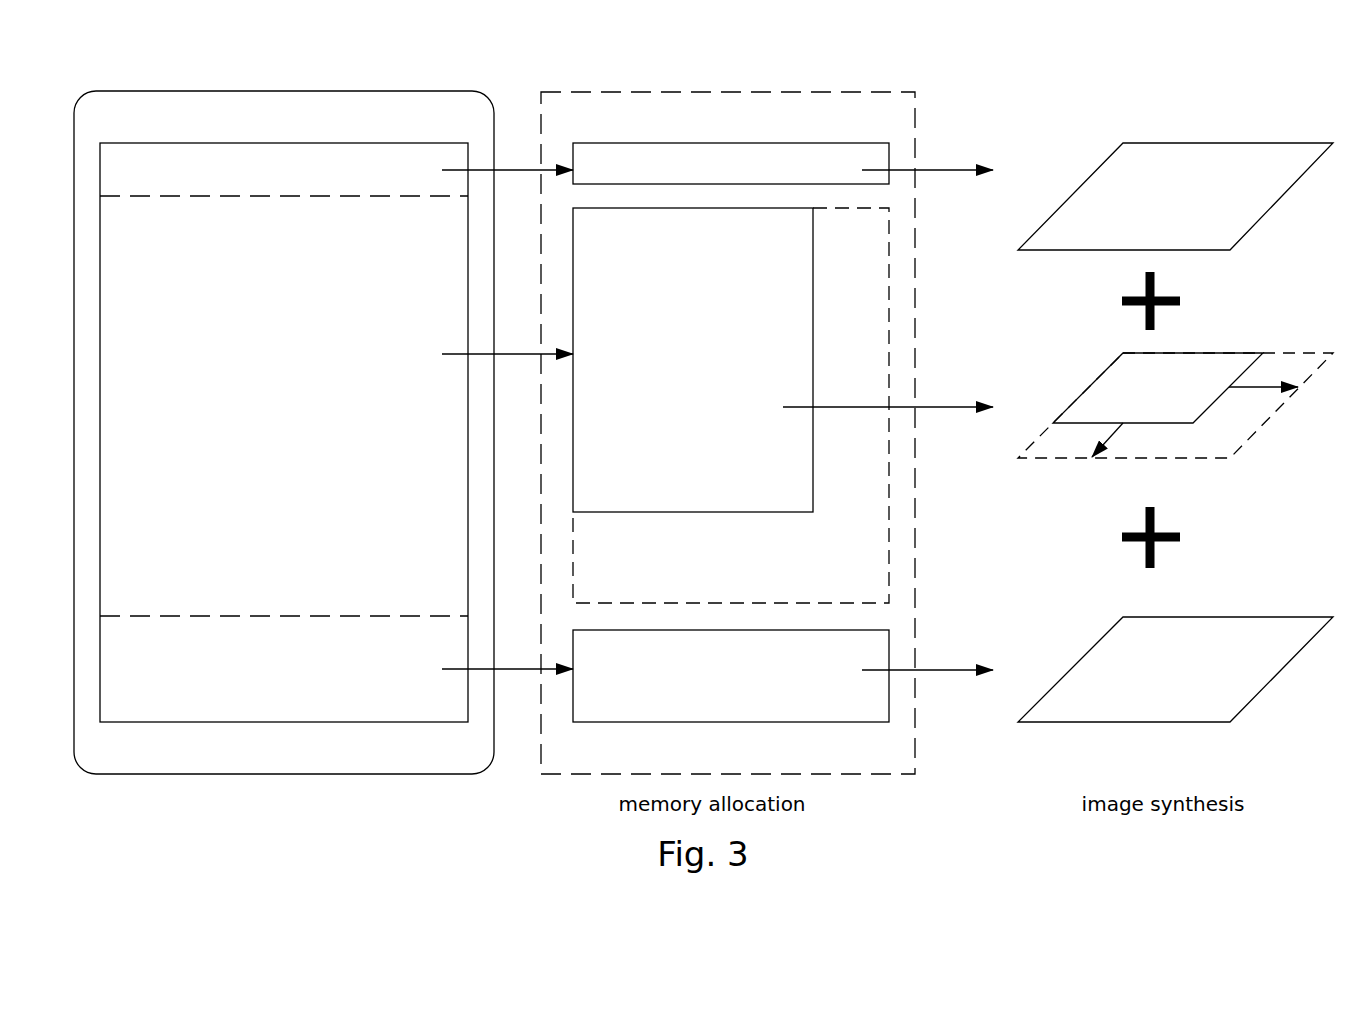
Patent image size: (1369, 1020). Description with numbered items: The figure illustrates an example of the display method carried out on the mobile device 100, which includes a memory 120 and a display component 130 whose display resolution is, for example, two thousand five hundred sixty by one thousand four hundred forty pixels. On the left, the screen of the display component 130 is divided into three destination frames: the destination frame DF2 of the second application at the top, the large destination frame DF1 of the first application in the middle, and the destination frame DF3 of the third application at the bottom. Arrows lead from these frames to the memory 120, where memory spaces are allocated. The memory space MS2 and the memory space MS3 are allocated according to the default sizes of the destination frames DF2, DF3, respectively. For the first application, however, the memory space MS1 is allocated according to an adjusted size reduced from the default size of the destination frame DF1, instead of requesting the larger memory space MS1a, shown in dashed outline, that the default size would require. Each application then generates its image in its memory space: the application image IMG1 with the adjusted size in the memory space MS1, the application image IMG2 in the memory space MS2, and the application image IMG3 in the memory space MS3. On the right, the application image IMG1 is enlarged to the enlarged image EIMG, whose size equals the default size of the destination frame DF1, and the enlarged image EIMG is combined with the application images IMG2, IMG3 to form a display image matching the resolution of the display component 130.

The mobile device 100 is at (230, 91).
The display component 130 is at (182, 143).
The memory 120 is at (728, 433).
The destination frame DF1 is at (282, 432).
The destination frame DF2 is at (284, 178).
The destination frame DF3 is at (284, 647).
The memory space MS1 is at (693, 360).
The memory space MS1a is at (889, 540).
The memory space MS2 is at (731, 163).
The memory space MS3 is at (731, 676).
The application image IMG1 is at (1158, 388).
The application image IMG2 is at (1175, 196).
The application image IMG3 is at (1175, 669).
The enlarged image EIMG is at (1263, 425).